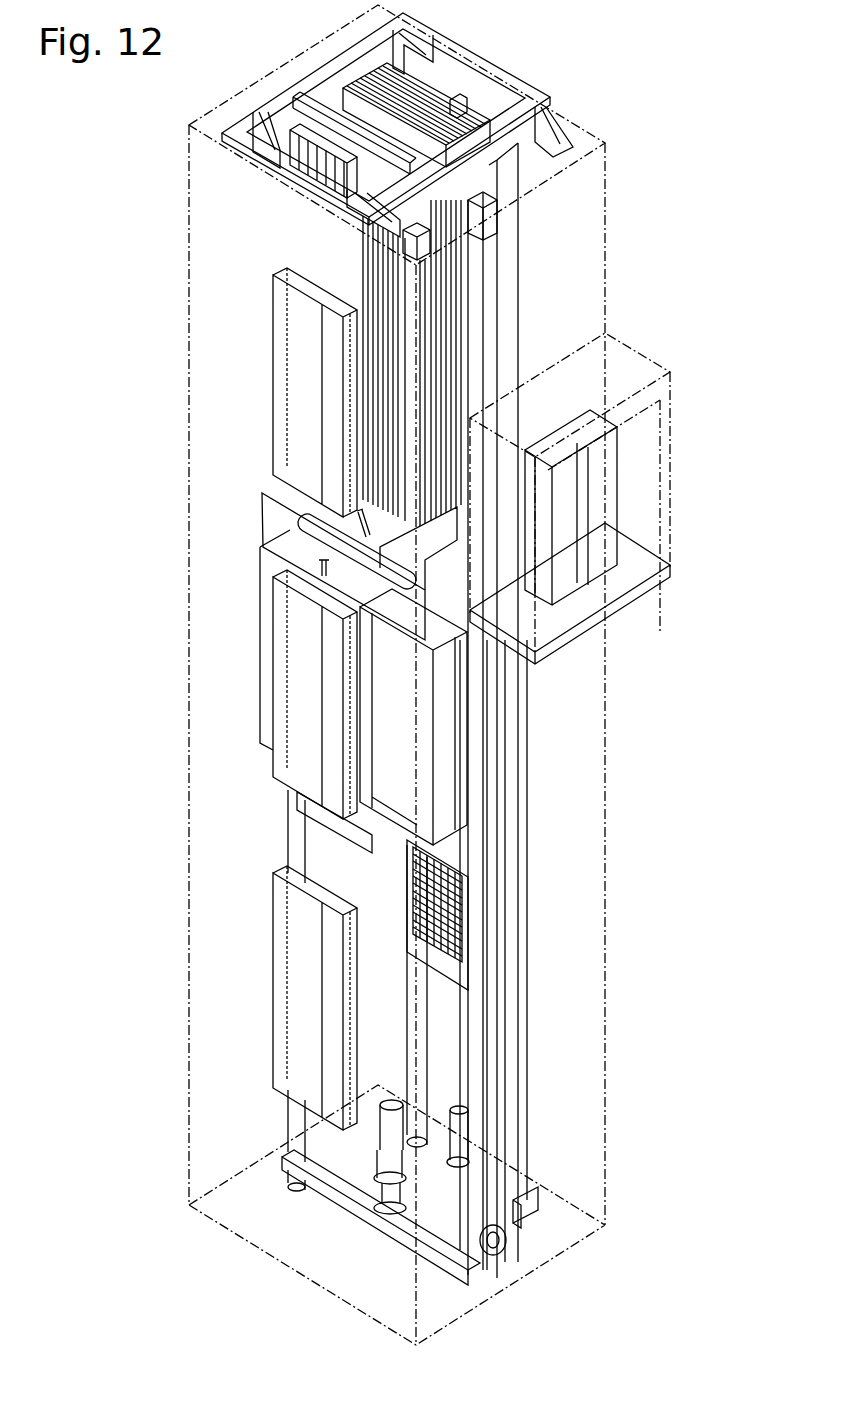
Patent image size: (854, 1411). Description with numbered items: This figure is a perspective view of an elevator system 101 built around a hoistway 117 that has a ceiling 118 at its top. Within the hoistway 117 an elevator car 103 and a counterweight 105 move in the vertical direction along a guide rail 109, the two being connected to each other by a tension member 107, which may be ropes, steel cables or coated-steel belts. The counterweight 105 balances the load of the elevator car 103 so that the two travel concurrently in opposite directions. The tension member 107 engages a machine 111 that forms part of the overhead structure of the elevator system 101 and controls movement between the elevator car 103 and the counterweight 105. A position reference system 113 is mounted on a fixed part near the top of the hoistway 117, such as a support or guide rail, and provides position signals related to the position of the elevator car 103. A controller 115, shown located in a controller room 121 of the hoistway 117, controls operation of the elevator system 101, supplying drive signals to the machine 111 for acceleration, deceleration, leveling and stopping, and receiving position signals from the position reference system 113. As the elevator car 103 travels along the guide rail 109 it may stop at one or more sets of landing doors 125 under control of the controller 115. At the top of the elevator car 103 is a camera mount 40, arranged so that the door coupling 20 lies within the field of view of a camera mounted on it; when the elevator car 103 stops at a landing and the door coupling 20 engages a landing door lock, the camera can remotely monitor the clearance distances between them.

The elevator system 101 is at (636, 153).
The elevator car 103 is at (402, 728).
The counterweight 105 is at (462, 924).
The tension member 107 is at (410, 384).
The guide rail 109 is at (498, 818).
The machine 111 is at (300, 123).
The position reference system 113 is at (497, 218).
The controller 115 is at (612, 495).
The hoistway 117 is at (253, 841).
The ceiling 118 is at (571, 119).
The controller room 121 is at (692, 393).
The landing doors 125 is at (272, 383).
The door coupling 20 is at (330, 580).
The camera mount 40 is at (372, 535).